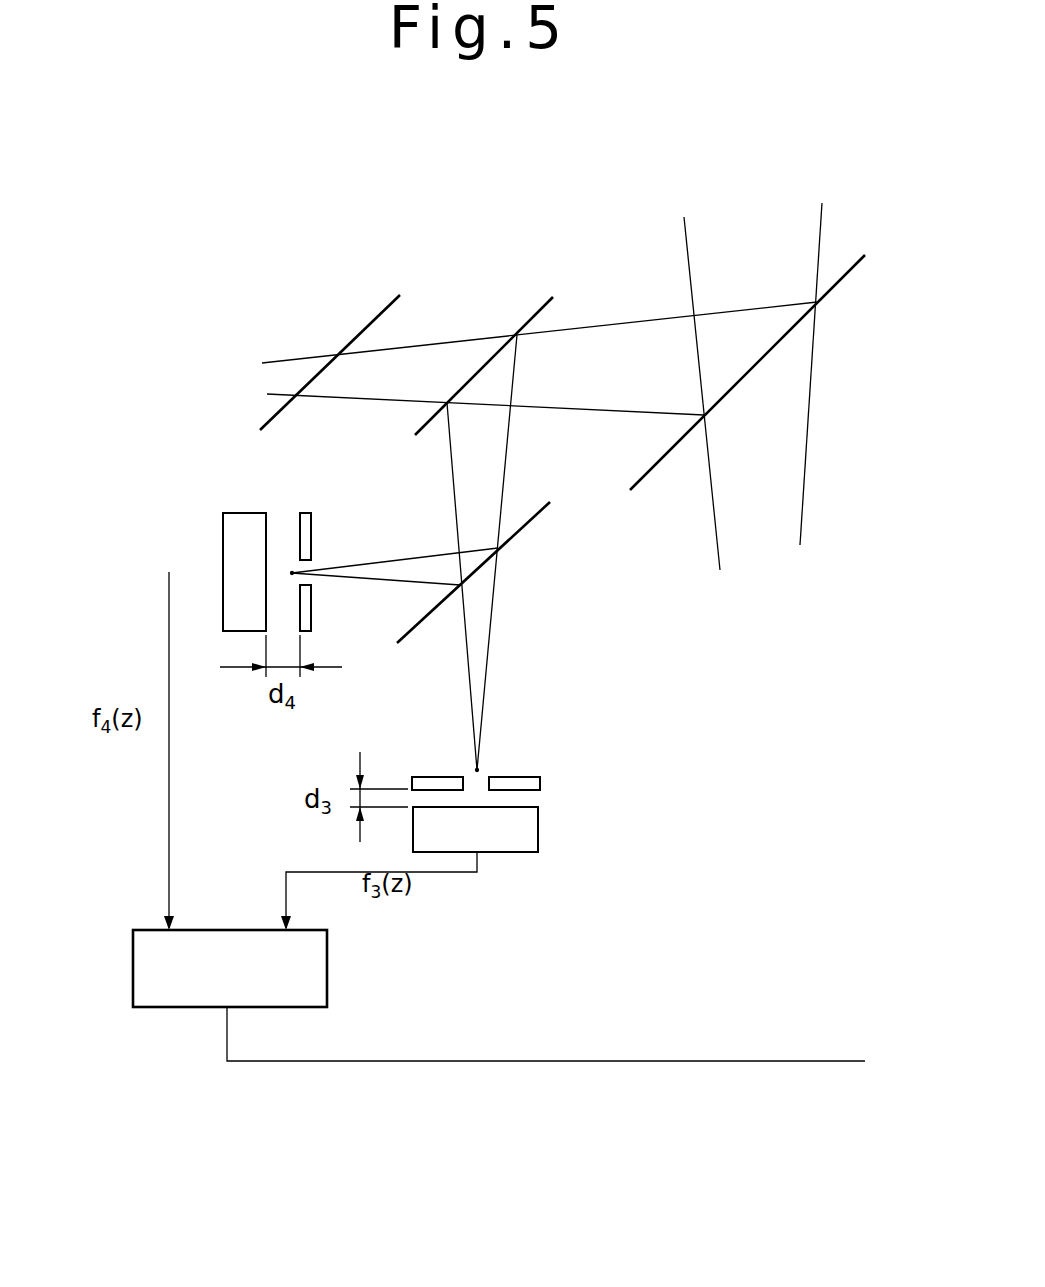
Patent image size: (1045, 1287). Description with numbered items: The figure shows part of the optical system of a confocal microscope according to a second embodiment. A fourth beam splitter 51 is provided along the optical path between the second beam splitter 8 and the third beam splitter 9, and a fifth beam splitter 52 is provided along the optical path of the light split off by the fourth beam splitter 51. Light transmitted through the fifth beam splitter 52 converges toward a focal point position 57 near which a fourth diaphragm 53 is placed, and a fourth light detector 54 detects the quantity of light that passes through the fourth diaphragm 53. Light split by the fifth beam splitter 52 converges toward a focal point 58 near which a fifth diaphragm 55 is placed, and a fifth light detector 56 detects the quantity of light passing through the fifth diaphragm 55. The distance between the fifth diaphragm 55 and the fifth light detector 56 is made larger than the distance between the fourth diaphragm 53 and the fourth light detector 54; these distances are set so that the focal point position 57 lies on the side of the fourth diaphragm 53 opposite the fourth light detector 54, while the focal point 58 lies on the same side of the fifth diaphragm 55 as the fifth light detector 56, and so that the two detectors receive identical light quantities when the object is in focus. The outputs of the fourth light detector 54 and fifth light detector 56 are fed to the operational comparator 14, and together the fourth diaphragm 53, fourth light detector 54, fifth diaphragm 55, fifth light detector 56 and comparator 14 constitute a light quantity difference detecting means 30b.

The second beam splitter 8 is at (862, 257).
The third beam splitter 9 is at (383, 310).
The fourth beam splitter 51 is at (550, 298).
The fifth beam splitter 52 is at (547, 505).
The fourth diaphragm 53 is at (540, 788).
The fourth light detector 54 is at (538, 842).
The fifth diaphragm 55 is at (303, 512).
The fifth light detector 56 is at (235, 512).
The focal point position 57 is at (477, 770).
The focal point 58 is at (292, 572).
The comparator 14 is at (325, 973).
The light quantity difference detecting means 30b is at (194, 1026).